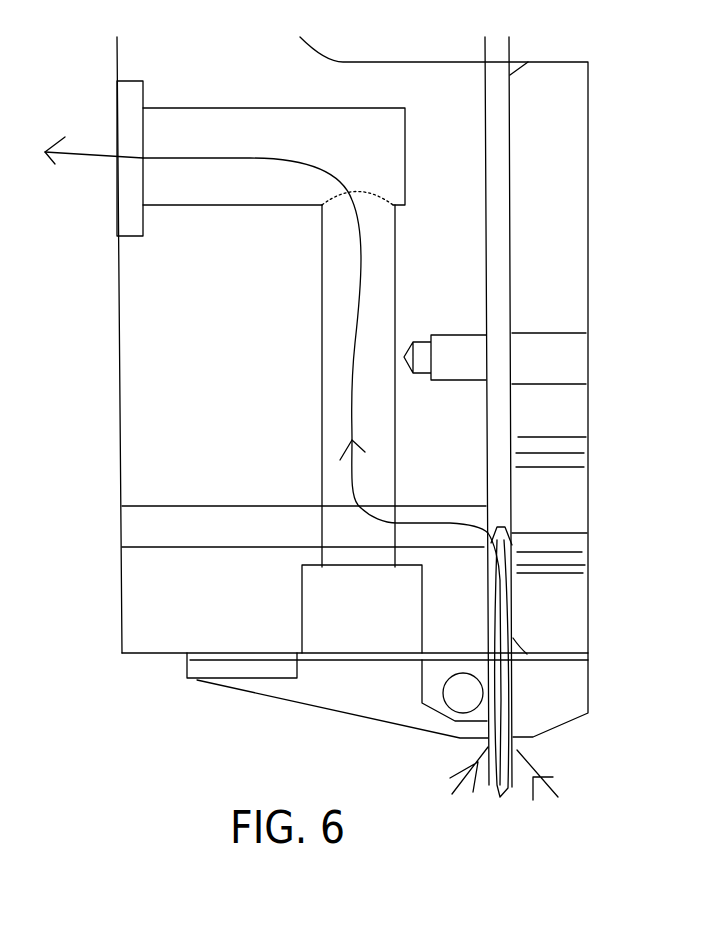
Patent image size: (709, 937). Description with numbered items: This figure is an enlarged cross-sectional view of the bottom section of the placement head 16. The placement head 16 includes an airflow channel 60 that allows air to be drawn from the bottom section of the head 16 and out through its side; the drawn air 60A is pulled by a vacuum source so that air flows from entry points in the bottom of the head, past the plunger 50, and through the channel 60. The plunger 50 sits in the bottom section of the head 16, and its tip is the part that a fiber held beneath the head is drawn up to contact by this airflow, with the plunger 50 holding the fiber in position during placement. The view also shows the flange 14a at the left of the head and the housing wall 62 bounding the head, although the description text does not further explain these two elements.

The mounting flange 14a is at (117, 108).
The placement head 16 is at (590, 110).
The plunger 50 is at (510, 792).
The airflow channel 60 is at (513, 687).
The air 60A is at (78, 160).
The housing 62 is at (117, 335).